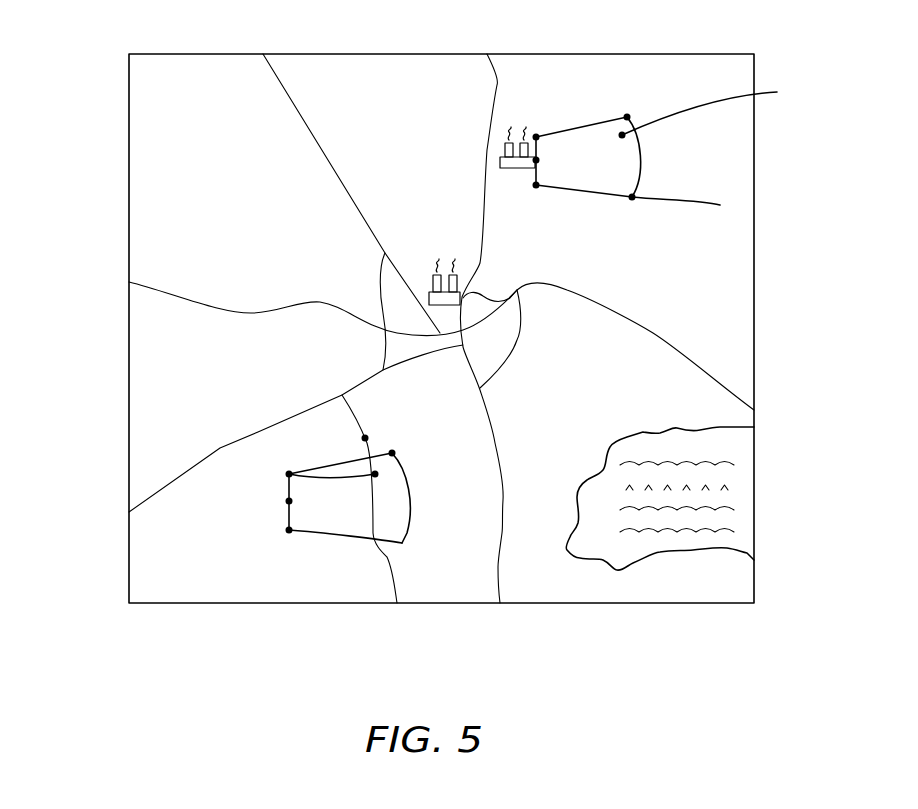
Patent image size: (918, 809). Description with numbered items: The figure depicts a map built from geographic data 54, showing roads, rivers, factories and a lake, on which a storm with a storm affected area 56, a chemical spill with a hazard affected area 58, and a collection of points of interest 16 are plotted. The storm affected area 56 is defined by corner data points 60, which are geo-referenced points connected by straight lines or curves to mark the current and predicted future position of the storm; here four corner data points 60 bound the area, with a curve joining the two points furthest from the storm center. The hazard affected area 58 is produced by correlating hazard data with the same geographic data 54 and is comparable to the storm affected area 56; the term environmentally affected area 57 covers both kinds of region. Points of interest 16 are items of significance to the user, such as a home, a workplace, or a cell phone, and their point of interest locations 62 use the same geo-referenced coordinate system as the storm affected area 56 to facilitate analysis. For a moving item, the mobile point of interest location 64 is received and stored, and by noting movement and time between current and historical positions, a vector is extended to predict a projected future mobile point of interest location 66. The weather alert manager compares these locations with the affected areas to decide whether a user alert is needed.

The geographic data 54 is at (197, 54).
The storm affected area 56 is at (340, 538).
The environmentally affected area 57 is at (494, 338).
The hazard affected area 58 is at (583, 125).
The corner data points 60 is at (536, 137).
The point of interest locations 62 is at (643, 432).
The points of interest 16 is at (442, 324).
The mobile point of interest location 64 is at (365, 438).
The projected future mobile point of interest location 66 is at (375, 474).